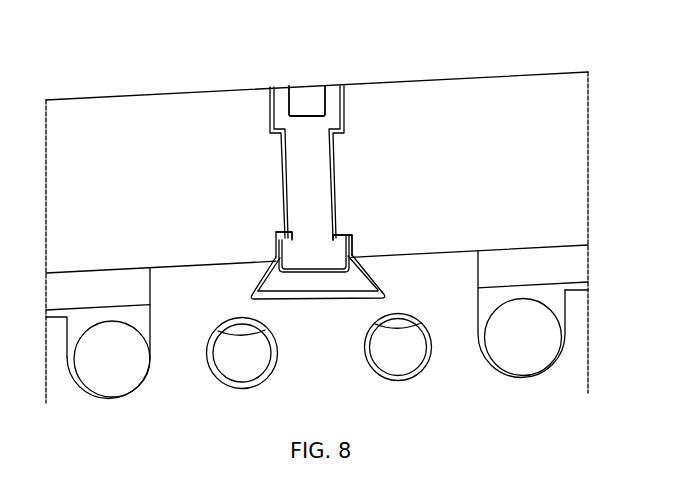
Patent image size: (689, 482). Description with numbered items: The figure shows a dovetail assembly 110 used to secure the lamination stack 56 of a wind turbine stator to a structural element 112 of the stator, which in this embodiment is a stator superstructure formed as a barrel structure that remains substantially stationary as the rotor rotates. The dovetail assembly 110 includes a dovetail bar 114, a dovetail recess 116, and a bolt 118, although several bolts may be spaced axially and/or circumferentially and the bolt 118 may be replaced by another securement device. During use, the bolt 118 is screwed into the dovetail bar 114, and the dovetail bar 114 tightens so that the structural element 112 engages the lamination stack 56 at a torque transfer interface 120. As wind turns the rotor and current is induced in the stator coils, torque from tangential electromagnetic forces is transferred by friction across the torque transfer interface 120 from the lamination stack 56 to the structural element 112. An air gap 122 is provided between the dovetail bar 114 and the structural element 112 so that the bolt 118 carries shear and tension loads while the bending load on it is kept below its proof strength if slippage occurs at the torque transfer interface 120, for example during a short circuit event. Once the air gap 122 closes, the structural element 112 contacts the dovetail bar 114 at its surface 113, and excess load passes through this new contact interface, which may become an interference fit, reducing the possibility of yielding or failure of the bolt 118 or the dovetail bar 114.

The lamination stack 56 is at (578, 348).
The dovetail assembly 110 is at (316, 192).
The structural element 112 is at (440, 103).
The surface 113 is at (270, 259).
The dovetail bar 114 is at (347, 278).
The dovetail recess 116 is at (370, 293).
The bolt 118 is at (337, 157).
The torque transfer interface 120 is at (194, 262).
The air gap 122 is at (275, 250).